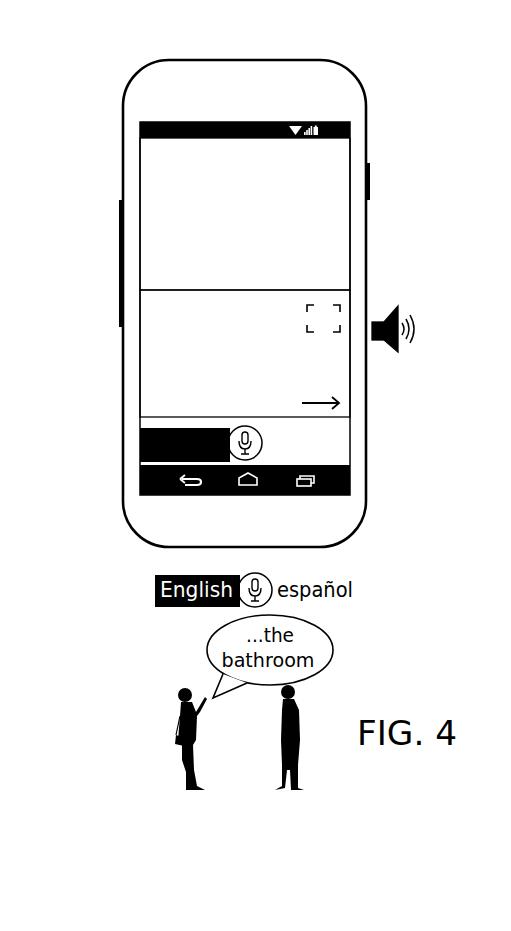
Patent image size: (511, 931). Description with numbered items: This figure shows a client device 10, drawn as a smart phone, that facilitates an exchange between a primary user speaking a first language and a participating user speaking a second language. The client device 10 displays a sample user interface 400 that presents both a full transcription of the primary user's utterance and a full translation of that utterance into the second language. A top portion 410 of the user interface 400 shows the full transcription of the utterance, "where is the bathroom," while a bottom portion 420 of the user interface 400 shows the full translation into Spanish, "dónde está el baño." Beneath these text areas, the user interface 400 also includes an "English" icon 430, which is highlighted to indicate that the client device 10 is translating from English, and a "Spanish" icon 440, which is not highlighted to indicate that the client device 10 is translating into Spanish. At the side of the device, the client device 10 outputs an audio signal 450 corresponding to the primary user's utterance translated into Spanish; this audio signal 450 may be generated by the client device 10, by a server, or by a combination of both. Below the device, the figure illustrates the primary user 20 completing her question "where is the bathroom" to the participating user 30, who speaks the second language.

The client device 10 is at (238, 40).
The user interface 400 is at (247, 301).
The top portion 410 is at (287, 198).
The bottom portion 420 is at (250, 343).
The "English" icon 430 is at (168, 428).
The "Spanish" icon 440 is at (280, 428).
The audio signal 450 is at (396, 314).
The primary user 20 is at (175, 707).
The participating user 30 is at (303, 707).